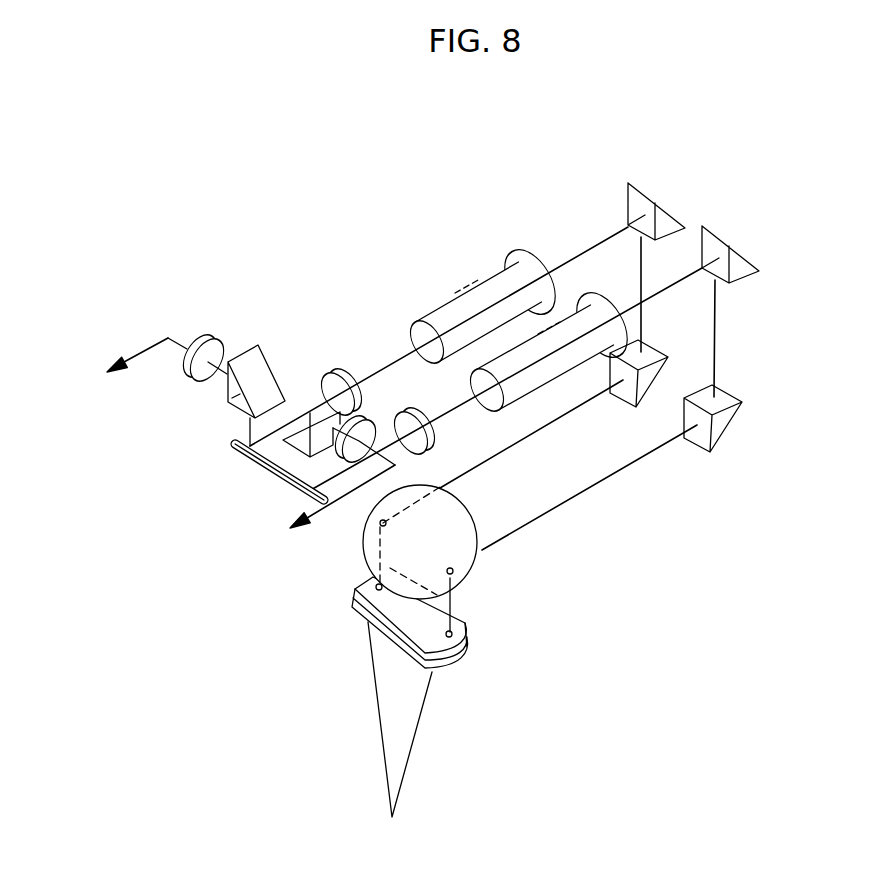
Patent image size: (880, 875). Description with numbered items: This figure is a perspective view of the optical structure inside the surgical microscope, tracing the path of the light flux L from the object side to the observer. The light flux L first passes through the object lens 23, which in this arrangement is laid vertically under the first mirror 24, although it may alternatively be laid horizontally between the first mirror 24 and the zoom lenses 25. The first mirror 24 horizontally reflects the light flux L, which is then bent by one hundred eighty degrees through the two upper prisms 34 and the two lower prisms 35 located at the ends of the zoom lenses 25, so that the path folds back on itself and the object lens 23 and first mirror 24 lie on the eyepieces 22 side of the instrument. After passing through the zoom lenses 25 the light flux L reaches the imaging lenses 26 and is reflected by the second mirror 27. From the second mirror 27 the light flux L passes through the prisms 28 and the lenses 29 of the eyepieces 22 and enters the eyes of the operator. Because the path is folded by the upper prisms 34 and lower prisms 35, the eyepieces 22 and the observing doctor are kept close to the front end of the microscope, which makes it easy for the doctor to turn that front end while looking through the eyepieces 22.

The eyepieces 22 is at (207, 284).
The object lens 23 is at (460, 667).
The first mirror 24 is at (478, 540).
The zoom lenses 25 is at (456, 298).
The imaging lenses 26 is at (339, 368).
The second mirror 27 is at (252, 460).
The prisms 28 is at (228, 396).
The lenses 29 is at (212, 340).
The upper prisms 34 is at (664, 212).
The lower prisms 35 is at (651, 346).
The light flux L is at (418, 725).